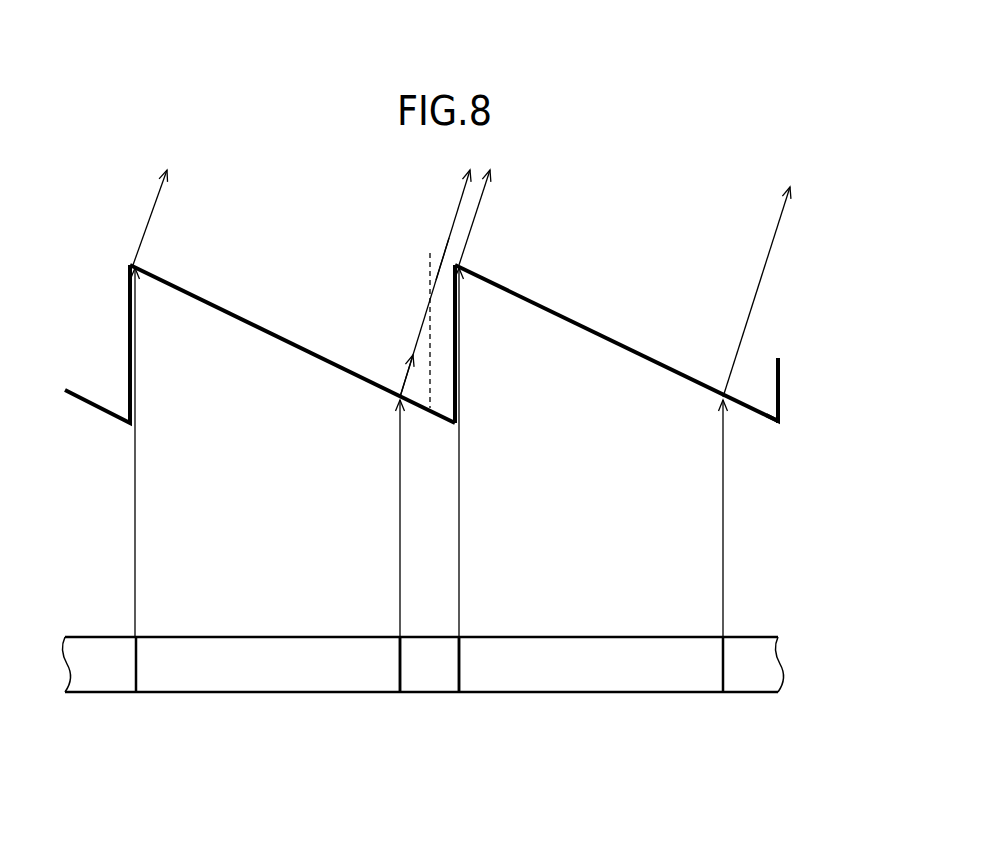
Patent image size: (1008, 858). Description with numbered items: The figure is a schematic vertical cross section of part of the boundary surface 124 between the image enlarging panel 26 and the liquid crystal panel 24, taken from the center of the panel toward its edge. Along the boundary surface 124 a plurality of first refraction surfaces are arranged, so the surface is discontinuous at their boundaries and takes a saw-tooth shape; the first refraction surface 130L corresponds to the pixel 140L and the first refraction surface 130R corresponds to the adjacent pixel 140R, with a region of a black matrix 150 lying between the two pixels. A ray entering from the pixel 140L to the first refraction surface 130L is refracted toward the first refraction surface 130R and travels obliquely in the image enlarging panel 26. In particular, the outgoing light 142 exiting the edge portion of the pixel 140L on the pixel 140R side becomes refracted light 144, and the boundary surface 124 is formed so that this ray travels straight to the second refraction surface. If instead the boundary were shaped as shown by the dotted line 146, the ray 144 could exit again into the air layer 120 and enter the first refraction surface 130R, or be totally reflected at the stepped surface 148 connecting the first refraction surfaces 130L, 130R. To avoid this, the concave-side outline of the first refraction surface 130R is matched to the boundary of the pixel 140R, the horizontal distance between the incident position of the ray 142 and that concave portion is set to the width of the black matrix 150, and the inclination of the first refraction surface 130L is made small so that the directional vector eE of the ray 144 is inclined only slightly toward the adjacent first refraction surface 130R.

The liquid crystal panel 24 is at (456, 702).
The image enlarging panel 26 is at (779, 388).
The air layer 120 is at (465, 411).
The boundary surface 124 is at (760, 418).
The first refraction surface 130L is at (311, 322).
The first refraction surface 130R is at (622, 316).
The pixel 140L is at (253, 675).
The pixel 140R is at (593, 675).
The outgoing light 142 is at (399, 537).
The refracted light 144 is at (462, 204).
The dotted line 146 is at (443, 260).
The stepped surface 148 is at (430, 277).
The black matrix 150 is at (430, 675).
The directional vector eE is at (405, 372).